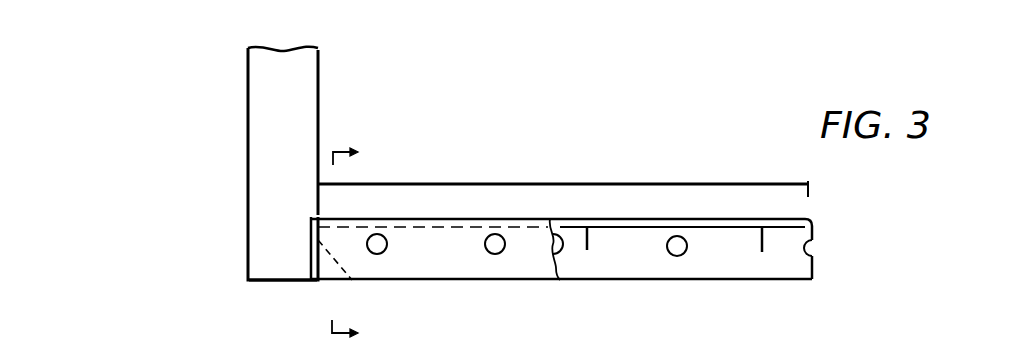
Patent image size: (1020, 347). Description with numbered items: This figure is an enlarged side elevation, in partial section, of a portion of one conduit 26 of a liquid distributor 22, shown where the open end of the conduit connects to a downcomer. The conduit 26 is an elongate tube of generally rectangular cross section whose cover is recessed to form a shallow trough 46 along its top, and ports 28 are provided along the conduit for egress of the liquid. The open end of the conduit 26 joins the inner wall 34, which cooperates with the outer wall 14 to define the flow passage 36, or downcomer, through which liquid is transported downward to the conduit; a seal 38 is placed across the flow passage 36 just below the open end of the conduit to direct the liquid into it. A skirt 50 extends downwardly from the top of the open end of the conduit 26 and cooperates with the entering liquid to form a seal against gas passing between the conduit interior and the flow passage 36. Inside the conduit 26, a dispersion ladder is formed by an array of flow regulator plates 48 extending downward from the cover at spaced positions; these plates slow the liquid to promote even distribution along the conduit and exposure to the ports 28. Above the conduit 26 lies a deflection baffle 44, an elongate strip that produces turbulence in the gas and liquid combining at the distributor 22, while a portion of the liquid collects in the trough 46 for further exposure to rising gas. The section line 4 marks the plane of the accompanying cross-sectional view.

The outer wall 14 is at (247, 97).
The distributor 22 is at (672, 172).
The conduit 26 is at (440, 270).
The ports 28 is at (502, 252).
The inner wall 34 is at (318, 77).
The flow passage 36 is at (270, 137).
The seal 38 is at (278, 283).
The deflection baffle 44 is at (462, 184).
The trough 46 is at (792, 223).
The plates 48 is at (758, 240).
The skirt 50 is at (350, 277).
The section line 4- 4 is at (352, 243).